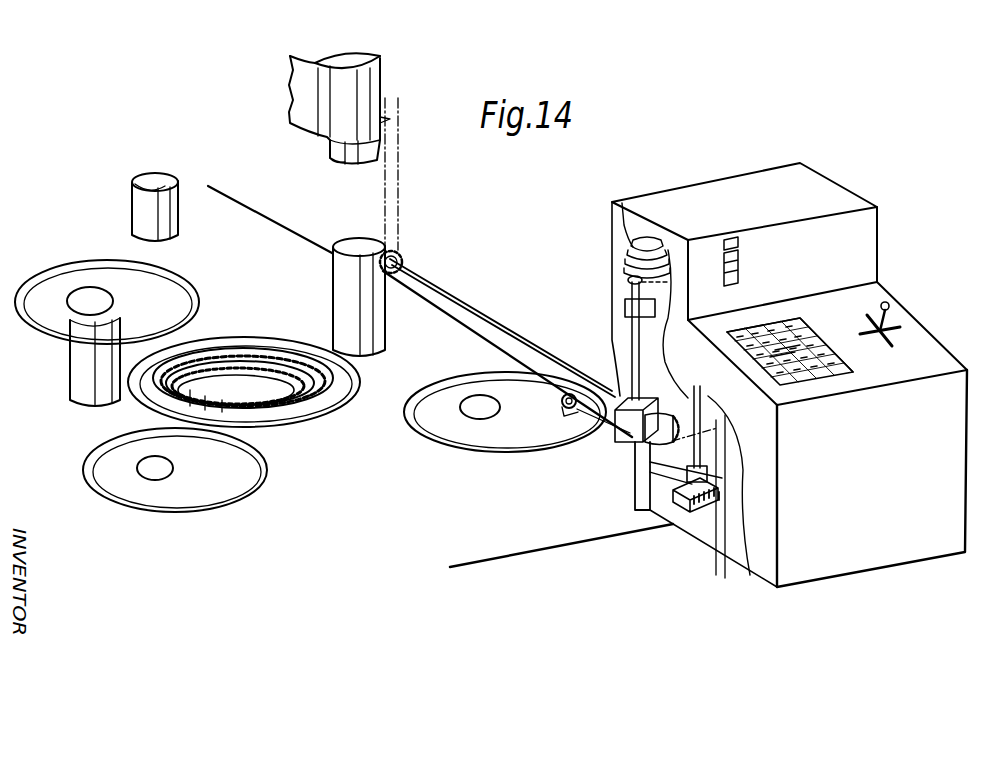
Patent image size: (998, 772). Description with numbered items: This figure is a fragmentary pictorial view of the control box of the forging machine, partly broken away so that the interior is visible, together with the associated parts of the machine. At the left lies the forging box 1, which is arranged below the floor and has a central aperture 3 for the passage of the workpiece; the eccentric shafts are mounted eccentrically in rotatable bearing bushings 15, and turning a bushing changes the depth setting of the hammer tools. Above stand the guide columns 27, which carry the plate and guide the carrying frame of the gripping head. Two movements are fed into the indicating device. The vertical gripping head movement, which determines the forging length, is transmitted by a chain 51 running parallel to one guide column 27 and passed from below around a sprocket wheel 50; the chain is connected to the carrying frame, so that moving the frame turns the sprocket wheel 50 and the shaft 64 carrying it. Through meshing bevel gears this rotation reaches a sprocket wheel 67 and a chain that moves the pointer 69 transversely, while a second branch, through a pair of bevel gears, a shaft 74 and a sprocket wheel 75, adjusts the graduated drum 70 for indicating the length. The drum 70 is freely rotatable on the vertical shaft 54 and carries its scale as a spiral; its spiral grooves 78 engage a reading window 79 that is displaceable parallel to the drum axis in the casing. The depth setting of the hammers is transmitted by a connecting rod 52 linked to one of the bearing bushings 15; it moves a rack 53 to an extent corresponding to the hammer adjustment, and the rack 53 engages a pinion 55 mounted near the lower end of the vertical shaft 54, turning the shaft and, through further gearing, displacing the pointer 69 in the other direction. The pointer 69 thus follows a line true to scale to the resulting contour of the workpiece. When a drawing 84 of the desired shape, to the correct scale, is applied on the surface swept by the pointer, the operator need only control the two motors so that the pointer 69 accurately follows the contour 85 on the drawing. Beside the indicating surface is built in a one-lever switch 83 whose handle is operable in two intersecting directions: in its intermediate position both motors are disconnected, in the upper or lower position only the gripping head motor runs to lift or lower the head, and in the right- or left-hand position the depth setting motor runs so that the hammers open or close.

The forging box 1 is at (533, 530).
The central aperture 3 is at (212, 392).
The bearing bushings 15 is at (550, 430).
The guide columns 27 is at (360, 280).
The sprocket wheel 50 is at (402, 260).
The chain 51 is at (398, 163).
The connecting rod 52 is at (607, 428).
The rack 53 is at (717, 497).
The vertical shaft 54 is at (697, 452).
The pinion 55 is at (697, 497).
The shaft 64 is at (468, 305).
The sprocket wheel 67 is at (672, 413).
The pointer 69 is at (770, 345).
The graduated drum 70 is at (652, 262).
The shaft 74 is at (631, 355).
The sprocket wheel 75 is at (630, 278).
The spiral grooves 78 is at (613, 232).
The reading window 79 is at (740, 262).
The one-lever switch 83 is at (893, 322).
The drawing 84 is at (810, 378).
The contour 85 is at (793, 348).